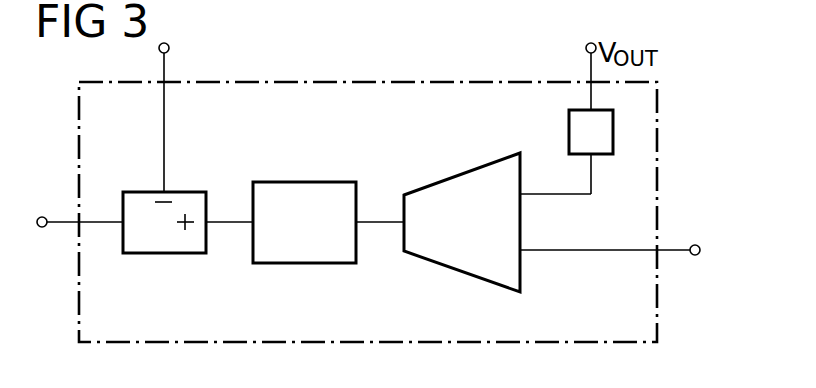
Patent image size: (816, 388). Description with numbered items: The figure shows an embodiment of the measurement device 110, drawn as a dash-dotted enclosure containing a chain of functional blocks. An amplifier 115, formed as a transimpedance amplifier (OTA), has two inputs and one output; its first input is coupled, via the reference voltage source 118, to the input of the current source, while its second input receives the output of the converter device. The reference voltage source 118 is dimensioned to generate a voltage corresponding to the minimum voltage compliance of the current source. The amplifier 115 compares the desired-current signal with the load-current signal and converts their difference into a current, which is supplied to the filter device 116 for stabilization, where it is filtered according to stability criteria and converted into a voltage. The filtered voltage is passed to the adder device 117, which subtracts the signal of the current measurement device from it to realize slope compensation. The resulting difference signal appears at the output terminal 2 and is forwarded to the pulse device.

The output terminal 2 is at (697, 245).
The measurement device 110 is at (659, 288).
The amplifier 115 is at (462, 270).
The filter device 116 is at (303, 264).
The adder device 117 is at (163, 254).
The reference voltage source 118 is at (569, 133).